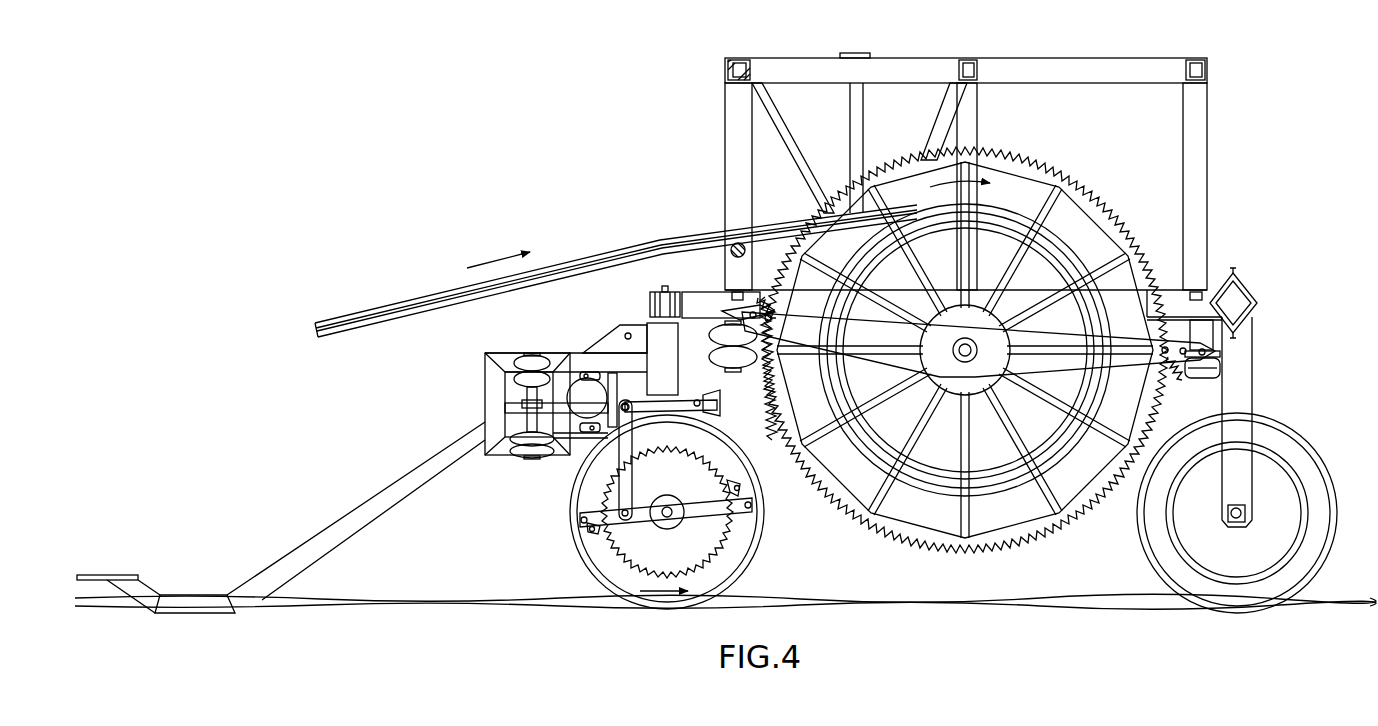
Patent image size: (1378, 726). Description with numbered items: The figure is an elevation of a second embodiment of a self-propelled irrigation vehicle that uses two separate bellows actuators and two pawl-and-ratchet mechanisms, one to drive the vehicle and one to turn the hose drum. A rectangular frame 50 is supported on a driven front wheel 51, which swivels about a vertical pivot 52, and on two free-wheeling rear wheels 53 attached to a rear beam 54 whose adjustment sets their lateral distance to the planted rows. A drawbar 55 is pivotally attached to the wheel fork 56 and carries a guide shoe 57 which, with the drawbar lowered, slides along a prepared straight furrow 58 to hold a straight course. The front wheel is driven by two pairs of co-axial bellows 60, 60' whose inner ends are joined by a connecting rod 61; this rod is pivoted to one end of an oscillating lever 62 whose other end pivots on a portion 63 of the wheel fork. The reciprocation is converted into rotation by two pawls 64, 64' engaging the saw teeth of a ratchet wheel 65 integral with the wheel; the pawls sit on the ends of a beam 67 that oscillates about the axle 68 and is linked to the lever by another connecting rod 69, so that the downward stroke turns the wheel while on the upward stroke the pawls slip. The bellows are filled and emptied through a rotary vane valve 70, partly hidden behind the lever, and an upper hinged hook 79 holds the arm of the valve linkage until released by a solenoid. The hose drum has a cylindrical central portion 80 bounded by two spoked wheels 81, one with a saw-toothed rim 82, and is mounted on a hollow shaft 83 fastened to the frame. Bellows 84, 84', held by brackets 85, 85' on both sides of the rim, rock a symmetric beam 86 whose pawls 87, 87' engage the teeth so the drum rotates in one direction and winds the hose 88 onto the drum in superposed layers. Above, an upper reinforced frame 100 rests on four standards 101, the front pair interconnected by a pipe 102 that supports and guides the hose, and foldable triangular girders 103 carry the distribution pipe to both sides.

The rectangular frame 50 is at (1175, 292).
The driven front wheel 51 is at (741, 560).
The vertical pivot 52 is at (660, 300).
The free-wheeling rear wheels 53 is at (1305, 471).
The rear beam 54 is at (1258, 301).
The drawbar 55 is at (320, 545).
The wheel fork 56 is at (668, 343).
The guide shoe 57 is at (503, 362).
The straight furrow 58 is at (408, 598).
The bellows 60 is at (533, 352).
The bellows 60' is at (523, 460).
The connecting rod 61 is at (500, 403).
The oscillating lever 62 is at (644, 404).
The portion of the wheel fork 63 is at (700, 401).
The pawl 64 is at (766, 491).
The pawl 64' is at (570, 549).
The ratchet wheel 65 is at (735, 540).
The beam 67 is at (700, 500).
The axle 68 is at (672, 516).
The connecting rod 69 is at (632, 476).
The rotary vane valve 70 is at (578, 392).
The upper hinged hook 79 is at (594, 372).
The cylindrical central portion 80 is at (1040, 280).
The spoked wheels 81 is at (1020, 186).
The saw-toothed rim 82 is at (1031, 539).
The hollow shaft 83 is at (978, 352).
The bellows 84 is at (762, 374).
The bellows 84' is at (1244, 364).
The bracket 85 is at (733, 364).
The bracket 85' is at (1243, 379).
The symmetric beam 86 is at (1133, 353).
The pawl 87 is at (749, 290).
The pawl 87' is at (1185, 384).
The hose 88 is at (341, 319).
The upper rectangular reinforced frame 100 is at (790, 64).
The standards 101 is at (724, 132).
The pipe 102 is at (729, 256).
The girders 103 is at (942, 132).